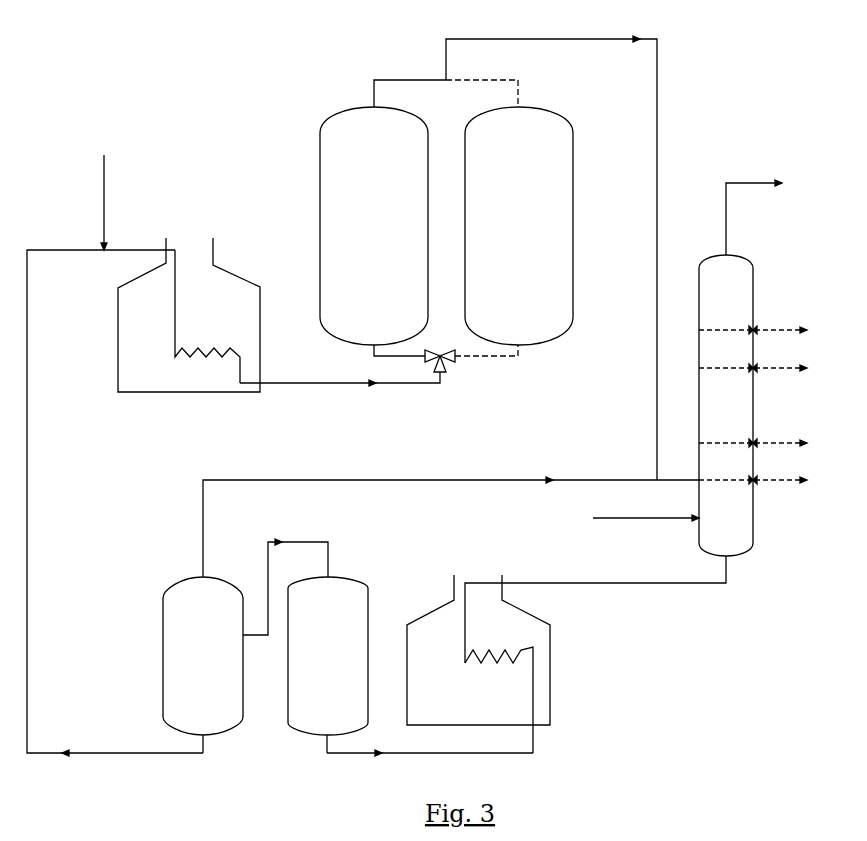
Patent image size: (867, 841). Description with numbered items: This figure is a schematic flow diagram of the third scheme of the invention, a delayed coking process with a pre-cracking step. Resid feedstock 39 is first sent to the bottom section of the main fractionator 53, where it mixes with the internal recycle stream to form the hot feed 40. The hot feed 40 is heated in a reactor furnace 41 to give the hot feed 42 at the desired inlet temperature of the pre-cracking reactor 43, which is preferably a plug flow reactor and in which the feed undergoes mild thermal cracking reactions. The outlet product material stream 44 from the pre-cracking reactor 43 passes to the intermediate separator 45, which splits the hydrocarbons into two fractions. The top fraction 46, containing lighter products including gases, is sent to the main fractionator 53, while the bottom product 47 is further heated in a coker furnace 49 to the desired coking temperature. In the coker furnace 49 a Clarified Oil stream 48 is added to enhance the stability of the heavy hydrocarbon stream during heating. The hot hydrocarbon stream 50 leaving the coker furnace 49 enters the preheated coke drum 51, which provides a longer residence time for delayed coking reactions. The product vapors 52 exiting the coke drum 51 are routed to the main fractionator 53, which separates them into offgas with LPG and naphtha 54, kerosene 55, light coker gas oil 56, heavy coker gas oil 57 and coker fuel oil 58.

The bottom product 47 is at (112, 752).
The Clarified Oil (CLO) stream 48 is at (105, 228).
The coker furnace 49 is at (222, 267).
The hot hydrocarbon stream 50 is at (297, 383).
The preheated coke drum 51 is at (446, 226).
The product vapors 52 is at (562, 39).
The main fractionator 53 is at (753, 288).
The offgas with LPG and naphtha 54 is at (772, 216).
The Kerosene 55 is at (766, 330).
The Light Coker Gas Oil (LCGO) 56 is at (766, 372).
The Heavy Coker Gas Oil (HCGO) 57 is at (766, 443).
The Coker Fuel Oil (CFO) 58 is at (766, 484).
The resid feedstock 39 is at (633, 518).
The hot feed 40 is at (553, 583).
The reactor furnace 41 is at (550, 648).
The hot feed 42 is at (427, 753).
The pre-cracking reactor 43 is at (368, 607).
The outlet product material stream 44 is at (288, 540).
The intermediate separator 45 is at (163, 593).
The top fraction 46 is at (230, 478).